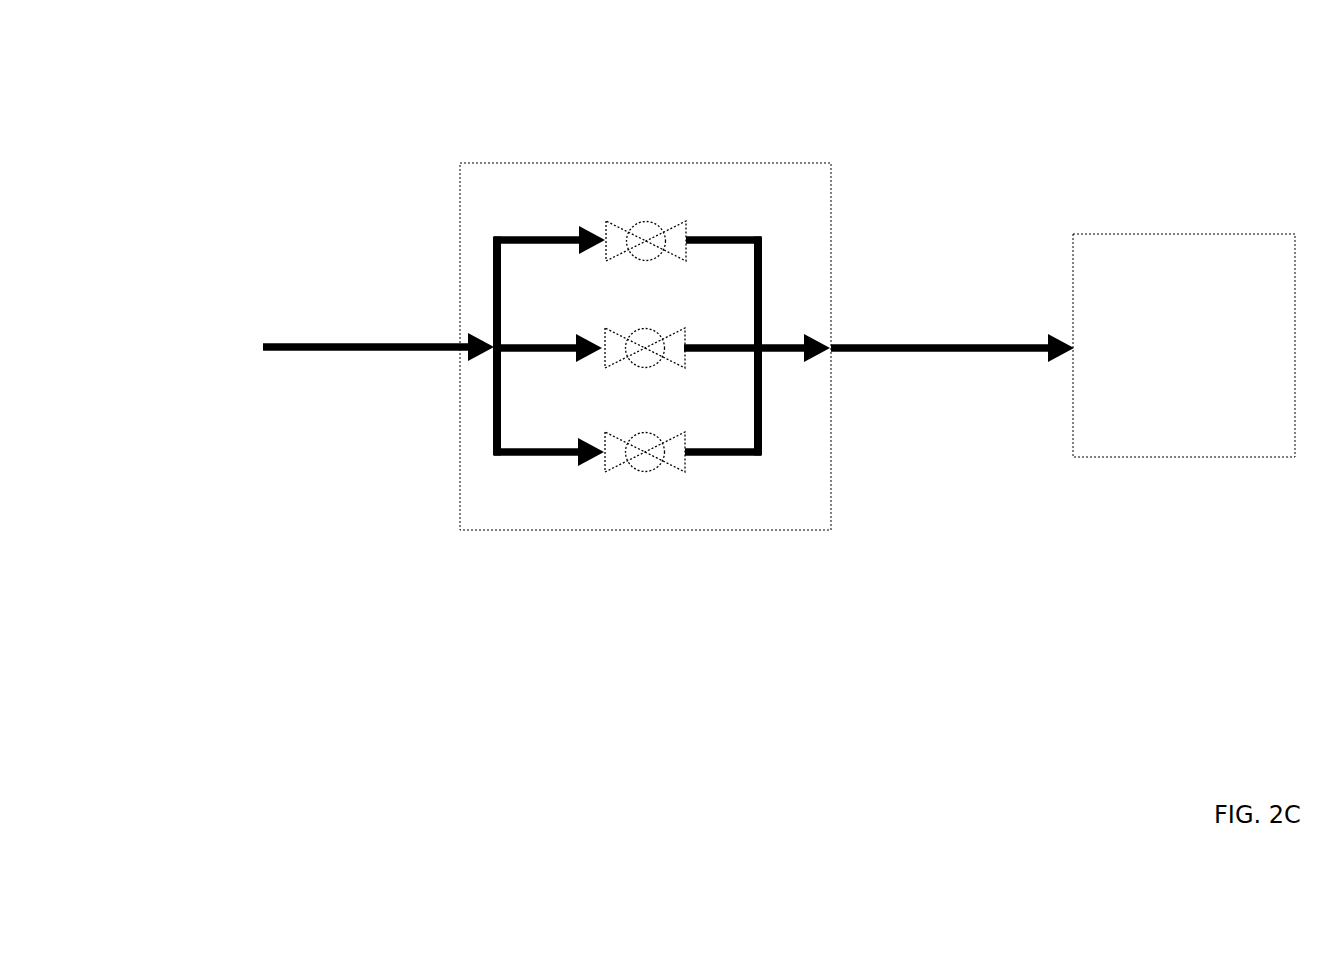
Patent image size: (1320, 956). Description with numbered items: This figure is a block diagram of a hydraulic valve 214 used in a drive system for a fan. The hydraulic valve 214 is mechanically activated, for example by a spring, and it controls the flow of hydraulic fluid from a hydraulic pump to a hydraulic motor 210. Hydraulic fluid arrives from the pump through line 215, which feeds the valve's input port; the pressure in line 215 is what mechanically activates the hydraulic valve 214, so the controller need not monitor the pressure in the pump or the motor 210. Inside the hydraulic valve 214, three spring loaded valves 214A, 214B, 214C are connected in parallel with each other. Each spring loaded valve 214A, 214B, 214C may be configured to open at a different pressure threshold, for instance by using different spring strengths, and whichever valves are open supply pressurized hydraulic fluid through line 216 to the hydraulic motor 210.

The hydraulic valve 214 is at (638, 286).
The spring loaded valve 214A is at (632, 214).
The spring loaded valve 214B is at (632, 316).
The spring loaded valve 214C is at (632, 425).
The line 215 is at (328, 329).
The line 216 is at (972, 335).
The motor 210 is at (1184, 345).